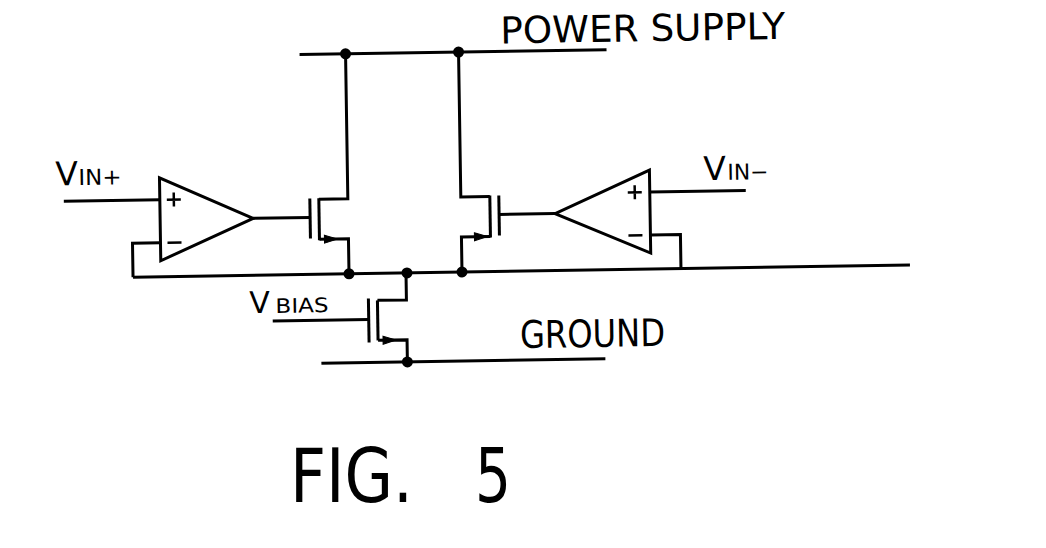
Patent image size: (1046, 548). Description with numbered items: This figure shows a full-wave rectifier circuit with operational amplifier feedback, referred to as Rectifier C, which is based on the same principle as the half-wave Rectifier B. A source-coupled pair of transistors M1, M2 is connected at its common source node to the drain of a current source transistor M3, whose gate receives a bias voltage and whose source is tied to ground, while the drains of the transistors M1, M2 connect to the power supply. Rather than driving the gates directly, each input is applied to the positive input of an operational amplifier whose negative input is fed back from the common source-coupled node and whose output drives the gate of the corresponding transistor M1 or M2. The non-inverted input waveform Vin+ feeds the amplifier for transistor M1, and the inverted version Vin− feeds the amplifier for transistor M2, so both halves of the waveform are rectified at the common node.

The transistor M1 is at (350, 163).
The transistor M2 is at (460, 161).
The current source transistor M3 is at (364, 318).